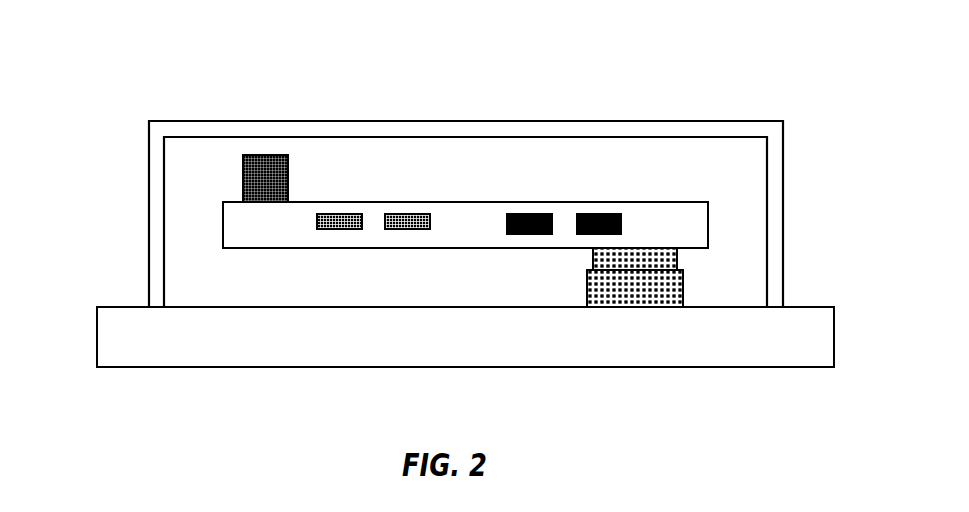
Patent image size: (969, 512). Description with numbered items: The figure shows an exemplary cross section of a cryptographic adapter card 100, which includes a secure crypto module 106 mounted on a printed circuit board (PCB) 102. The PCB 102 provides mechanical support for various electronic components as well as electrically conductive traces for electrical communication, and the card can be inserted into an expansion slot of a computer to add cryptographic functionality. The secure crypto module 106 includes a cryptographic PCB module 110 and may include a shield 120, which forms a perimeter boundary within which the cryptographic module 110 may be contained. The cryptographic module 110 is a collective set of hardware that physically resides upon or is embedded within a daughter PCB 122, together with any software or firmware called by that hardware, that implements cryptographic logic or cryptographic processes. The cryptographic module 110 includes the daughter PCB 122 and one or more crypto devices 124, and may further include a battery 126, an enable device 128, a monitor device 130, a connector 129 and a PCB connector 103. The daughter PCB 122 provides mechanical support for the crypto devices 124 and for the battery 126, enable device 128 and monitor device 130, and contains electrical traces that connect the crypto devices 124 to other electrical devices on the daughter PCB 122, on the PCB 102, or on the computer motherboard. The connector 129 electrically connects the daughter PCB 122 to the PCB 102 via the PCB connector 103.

The cryptographic adapter card 100 is at (780, 36).
The printed circuit board 102 is at (815, 338).
The PCB connector 103 is at (615, 297).
The secure crypto module 106 is at (470, 170).
The cryptographic PCB module 110 is at (794, 89).
The shield 120 is at (777, 183).
The daughter PCB 122 is at (690, 233).
The crypto devices 124 is at (528, 215).
The battery 126 is at (263, 180).
The enable device 128 is at (411, 215).
The connector 129 is at (653, 260).
The monitor device 130 is at (335, 215).